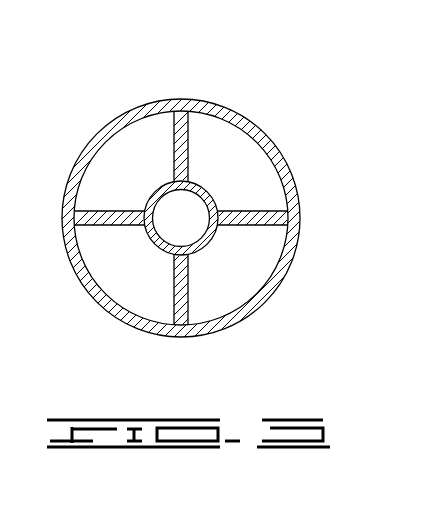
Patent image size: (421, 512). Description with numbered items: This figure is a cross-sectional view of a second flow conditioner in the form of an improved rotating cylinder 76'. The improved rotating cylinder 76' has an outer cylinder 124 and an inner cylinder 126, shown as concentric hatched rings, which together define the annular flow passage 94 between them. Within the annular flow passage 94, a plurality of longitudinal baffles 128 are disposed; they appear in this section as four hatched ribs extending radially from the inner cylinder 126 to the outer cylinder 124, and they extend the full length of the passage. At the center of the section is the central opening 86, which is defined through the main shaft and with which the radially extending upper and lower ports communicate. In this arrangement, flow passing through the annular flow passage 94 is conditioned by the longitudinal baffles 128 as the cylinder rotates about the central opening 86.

The improved rotating cylinder 76' is at (182, 185).
The outer cylinder 124 is at (276, 136).
The annular flow passage 94 is at (147, 148).
The longitudinal baffles 128 is at (102, 209).
The inner cylinder 126 is at (156, 252).
The central opening 86 is at (196, 236).